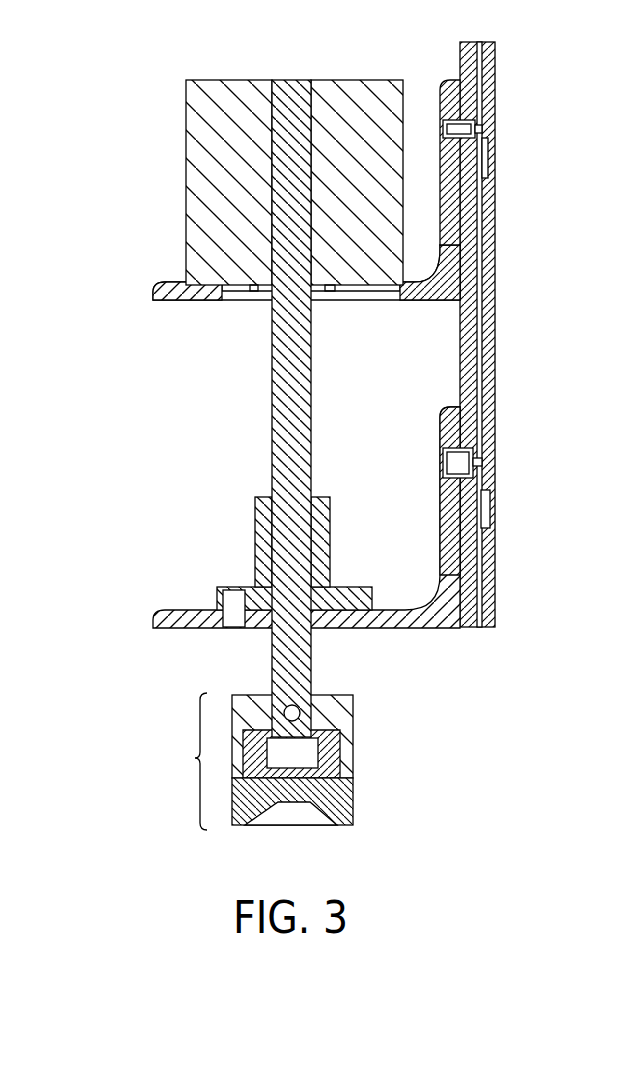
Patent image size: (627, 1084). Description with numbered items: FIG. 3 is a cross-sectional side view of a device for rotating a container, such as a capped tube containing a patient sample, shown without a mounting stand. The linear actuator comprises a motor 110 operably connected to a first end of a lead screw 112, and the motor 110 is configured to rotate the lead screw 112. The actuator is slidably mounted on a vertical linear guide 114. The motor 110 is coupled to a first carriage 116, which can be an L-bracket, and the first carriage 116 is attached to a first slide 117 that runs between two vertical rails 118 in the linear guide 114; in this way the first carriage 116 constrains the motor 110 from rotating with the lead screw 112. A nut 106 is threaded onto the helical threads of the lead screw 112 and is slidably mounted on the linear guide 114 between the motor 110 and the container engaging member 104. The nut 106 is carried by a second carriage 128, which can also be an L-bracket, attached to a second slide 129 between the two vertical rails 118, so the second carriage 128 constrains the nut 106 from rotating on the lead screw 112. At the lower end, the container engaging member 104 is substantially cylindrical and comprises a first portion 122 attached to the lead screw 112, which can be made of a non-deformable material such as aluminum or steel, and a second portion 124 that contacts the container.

The container engaging member 104 is at (177, 761).
The nut 106 is at (255, 520).
The motor 110 is at (185, 125).
The lead screw 112 is at (272, 410).
The vertical linear guide 114 is at (495, 55).
The first carriage 116 is at (152, 290).
The first slide 117 is at (487, 160).
The vertical rails 118 is at (440, 82).
The first portion 122 is at (353, 713).
The second portion 124 is at (353, 795).
The second carriage 128 is at (152, 617).
The second slide 129 is at (481, 478).